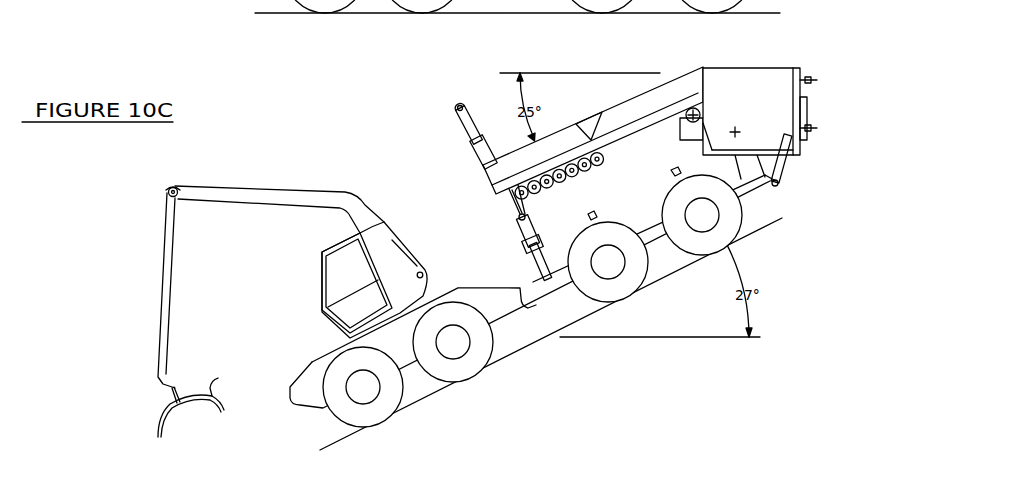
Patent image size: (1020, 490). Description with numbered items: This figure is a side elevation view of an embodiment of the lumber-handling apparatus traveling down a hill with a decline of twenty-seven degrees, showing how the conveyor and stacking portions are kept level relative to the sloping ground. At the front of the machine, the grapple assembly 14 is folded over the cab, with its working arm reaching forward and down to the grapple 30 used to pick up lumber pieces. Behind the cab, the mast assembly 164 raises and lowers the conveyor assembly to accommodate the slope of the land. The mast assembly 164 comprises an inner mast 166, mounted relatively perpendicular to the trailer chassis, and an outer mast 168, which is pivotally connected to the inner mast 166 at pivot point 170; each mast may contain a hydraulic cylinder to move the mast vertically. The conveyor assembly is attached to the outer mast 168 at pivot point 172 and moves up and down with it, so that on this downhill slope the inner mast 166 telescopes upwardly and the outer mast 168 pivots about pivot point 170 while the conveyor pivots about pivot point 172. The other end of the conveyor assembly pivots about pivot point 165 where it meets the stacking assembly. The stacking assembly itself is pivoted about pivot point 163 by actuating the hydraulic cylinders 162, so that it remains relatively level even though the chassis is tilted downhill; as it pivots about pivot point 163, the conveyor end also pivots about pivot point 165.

The grapple assembly 14 is at (250, 170).
The grapple 30 is at (213, 384).
The hydraulic cylinders 162 is at (782, 167).
The pivot point 163 is at (740, 127).
The mast assembly 164 is at (458, 144).
The pivot point 165 is at (696, 102).
The inner mast 166 is at (535, 262).
The outer mast 168 is at (520, 223).
The pivot point 170 is at (455, 103).
The pivot point 172 is at (530, 215).